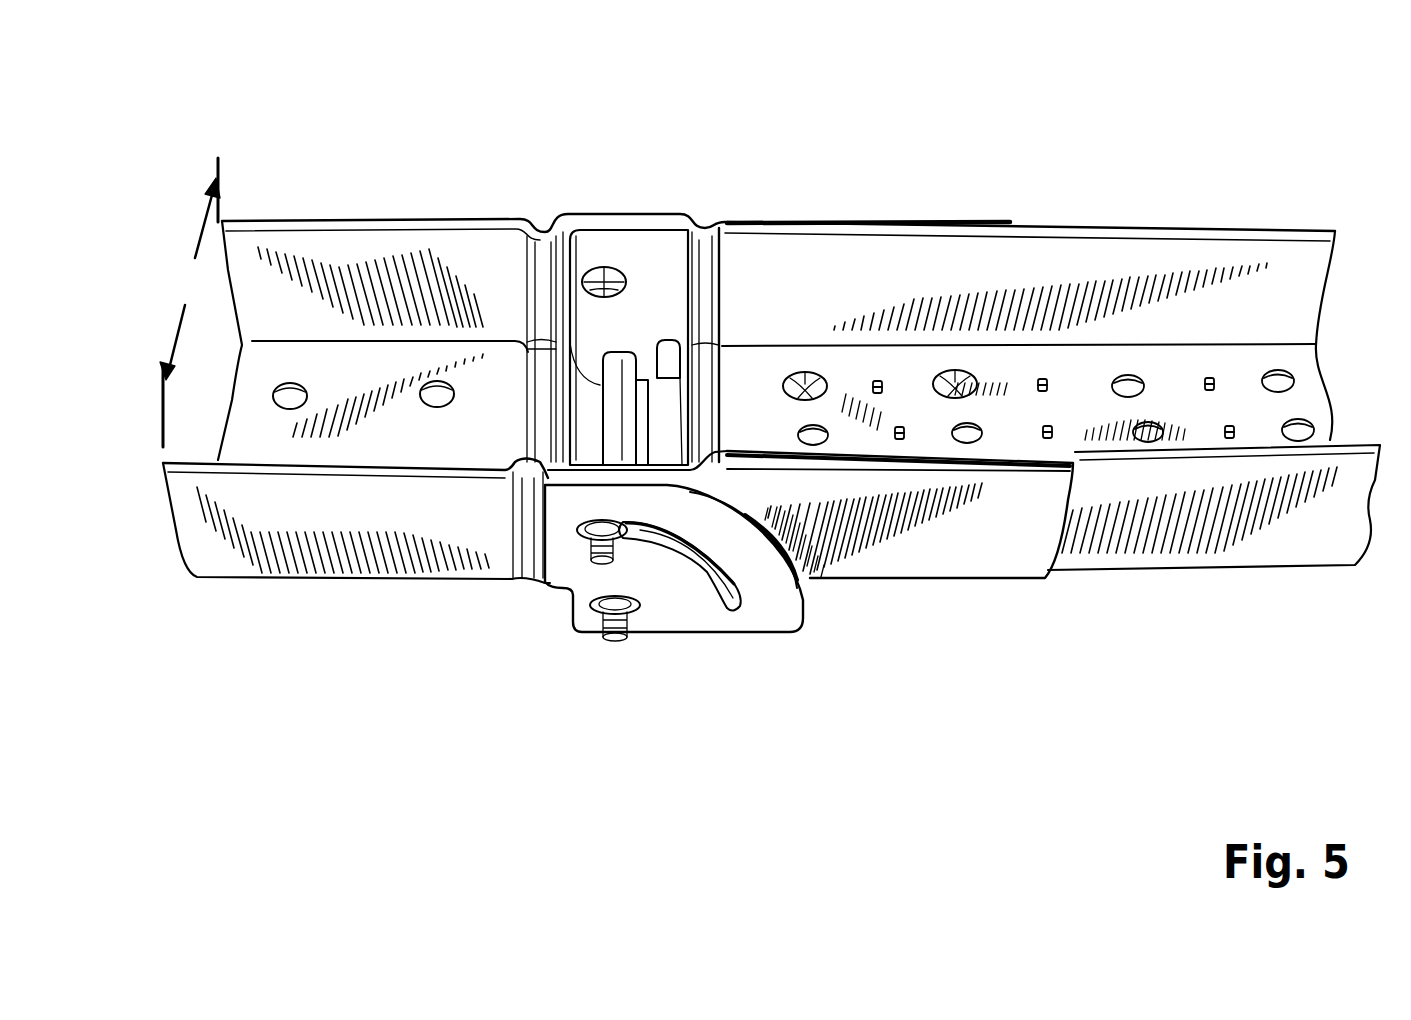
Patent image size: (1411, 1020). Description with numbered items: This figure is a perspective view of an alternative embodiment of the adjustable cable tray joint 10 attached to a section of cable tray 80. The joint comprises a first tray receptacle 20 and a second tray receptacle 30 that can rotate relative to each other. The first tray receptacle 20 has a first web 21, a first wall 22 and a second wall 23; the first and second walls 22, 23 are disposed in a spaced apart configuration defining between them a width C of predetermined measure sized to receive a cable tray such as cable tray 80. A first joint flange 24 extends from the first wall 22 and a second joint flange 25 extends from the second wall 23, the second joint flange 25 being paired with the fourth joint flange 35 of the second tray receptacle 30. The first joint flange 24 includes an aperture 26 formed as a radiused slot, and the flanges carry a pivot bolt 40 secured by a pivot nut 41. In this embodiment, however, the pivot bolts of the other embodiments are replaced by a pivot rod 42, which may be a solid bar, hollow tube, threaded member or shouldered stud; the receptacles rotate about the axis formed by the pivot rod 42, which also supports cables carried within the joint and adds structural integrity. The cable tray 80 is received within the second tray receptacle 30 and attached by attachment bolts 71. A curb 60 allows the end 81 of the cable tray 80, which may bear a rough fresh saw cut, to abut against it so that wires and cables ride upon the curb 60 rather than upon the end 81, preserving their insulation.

The adjustable cable tray joint 10 is at (294, 88).
The first tray receptacle 20 is at (272, 578).
The first web 21 is at (262, 372).
The first wall 22 is at (450, 510).
The second wall 23 is at (462, 260).
The first joint flange 24 is at (684, 607).
The second joint flange 25 is at (564, 232).
The aperture 26 is at (735, 602).
The second tray receptacle 30 is at (1018, 553).
The fourth joint flange 35 is at (643, 250).
The pivot bolt 40 is at (612, 642).
The pivot nut 41 is at (600, 614).
The pivot rod 42 is at (608, 393).
The curb 60 is at (697, 366).
The attachment bolt 71 is at (805, 378).
The cable tray 80 is at (1172, 232).
The end of cable tray 81 is at (720, 377).